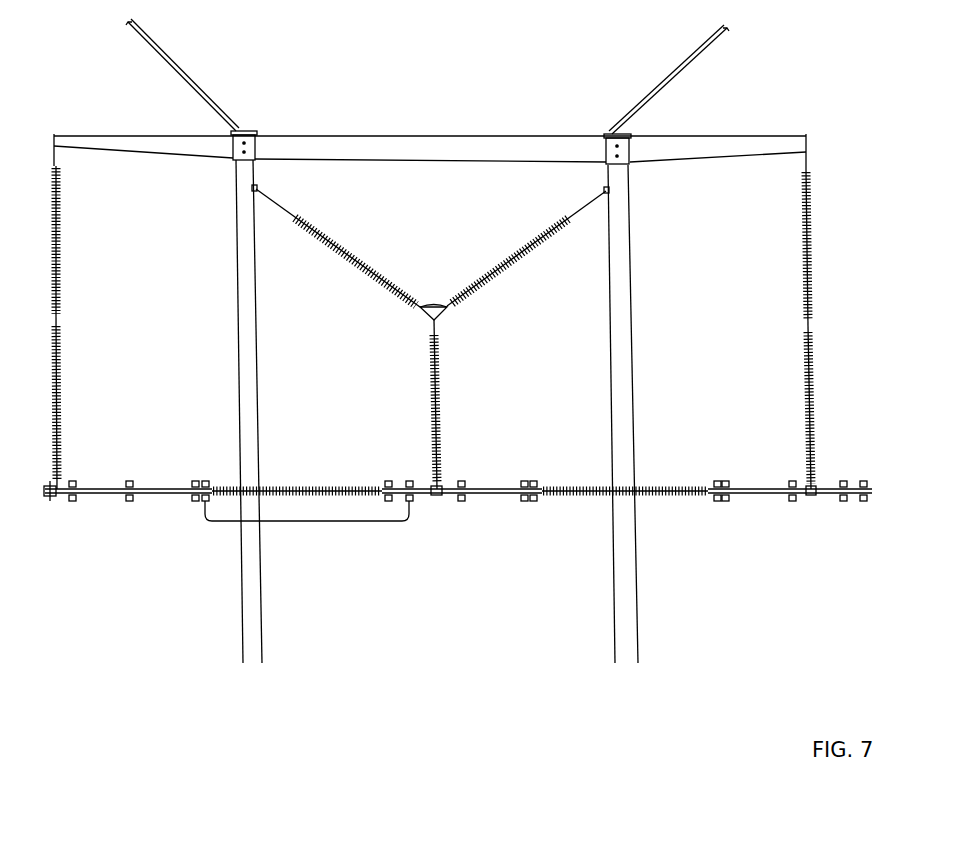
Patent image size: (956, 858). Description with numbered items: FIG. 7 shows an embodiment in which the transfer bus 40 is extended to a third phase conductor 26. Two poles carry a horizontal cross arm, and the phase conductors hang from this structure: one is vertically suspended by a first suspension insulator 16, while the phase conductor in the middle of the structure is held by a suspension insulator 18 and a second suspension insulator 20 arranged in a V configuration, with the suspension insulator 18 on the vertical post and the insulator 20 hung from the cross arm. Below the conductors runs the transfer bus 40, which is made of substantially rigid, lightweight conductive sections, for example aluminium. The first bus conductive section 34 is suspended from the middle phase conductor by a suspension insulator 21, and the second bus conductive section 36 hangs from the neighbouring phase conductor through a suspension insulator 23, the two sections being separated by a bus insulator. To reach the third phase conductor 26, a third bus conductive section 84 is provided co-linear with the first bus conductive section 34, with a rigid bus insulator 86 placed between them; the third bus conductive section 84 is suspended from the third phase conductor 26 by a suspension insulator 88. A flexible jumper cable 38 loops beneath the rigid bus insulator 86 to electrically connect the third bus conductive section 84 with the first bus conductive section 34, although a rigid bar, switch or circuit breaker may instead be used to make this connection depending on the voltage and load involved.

The first suspension insulator 16 is at (812, 258).
The suspension insulator 18 is at (509, 258).
The second suspension insulator 20 is at (372, 270).
The suspension insulator 21 is at (440, 398).
The suspension insulator 23 is at (815, 390).
The third phase conductor 26 is at (54, 318).
The first bus conductive section 34 is at (482, 487).
The second bus conductive section 36 is at (750, 487).
The jumper cable 38 is at (350, 523).
The transfer bus 40 is at (799, 543).
The third bus conductive section 84 is at (150, 487).
The rigid bus insulator 86 is at (317, 488).
The suspension insulator 88 is at (62, 416).